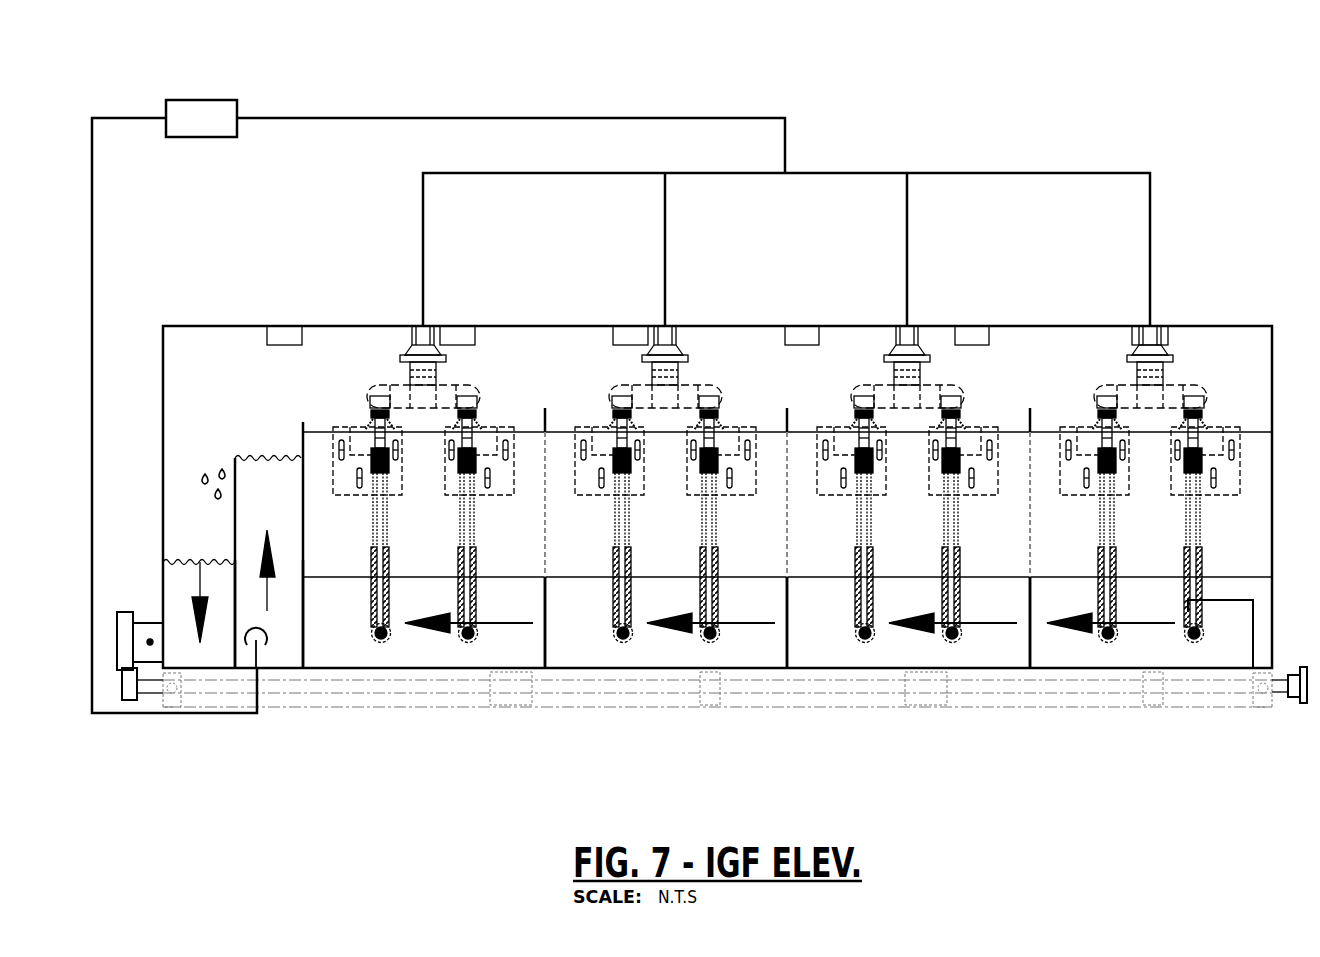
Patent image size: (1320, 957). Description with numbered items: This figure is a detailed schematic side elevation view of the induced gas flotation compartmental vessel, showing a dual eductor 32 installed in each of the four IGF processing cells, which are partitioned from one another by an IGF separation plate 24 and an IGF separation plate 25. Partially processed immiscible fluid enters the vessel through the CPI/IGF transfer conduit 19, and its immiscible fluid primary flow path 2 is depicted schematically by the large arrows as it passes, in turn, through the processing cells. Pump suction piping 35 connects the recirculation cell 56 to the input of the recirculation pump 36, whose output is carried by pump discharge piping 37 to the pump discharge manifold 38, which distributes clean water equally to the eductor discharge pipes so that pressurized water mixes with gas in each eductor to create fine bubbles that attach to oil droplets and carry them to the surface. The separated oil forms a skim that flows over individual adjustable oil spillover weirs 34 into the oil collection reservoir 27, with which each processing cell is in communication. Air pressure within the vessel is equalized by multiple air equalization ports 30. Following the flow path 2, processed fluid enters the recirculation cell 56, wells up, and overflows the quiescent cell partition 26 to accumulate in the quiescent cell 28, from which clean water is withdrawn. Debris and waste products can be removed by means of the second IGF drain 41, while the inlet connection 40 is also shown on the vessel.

The immiscible fluid primary flow path 2 is at (490, 624).
The CPI/IGF transfer conduit 19 is at (1252, 638).
The IGF separation plate 24 is at (548, 625).
The IGF separation plate 25 is at (302, 634).
The quiescent cell partition 26 is at (233, 634).
The oil collection reservoir (IGF) 27 is at (338, 549).
The quiescent cell 28 is at (180, 582).
The air equalization ports 30 is at (288, 338).
The dual eductor 32 is at (457, 562).
The adjustable oil spillover weirs 34 is at (467, 641).
The pump suction piping 35 is at (97, 318).
The recirculation pump 36 is at (200, 100).
The pump discharge piping 37 is at (512, 118).
The pump discharge manifold 38 is at (974, 172).
The fluid inlet nozzle 40 is at (127, 703).
The second (IGF) drain 41 is at (1305, 708).
The recirculation cell 56 is at (273, 488).